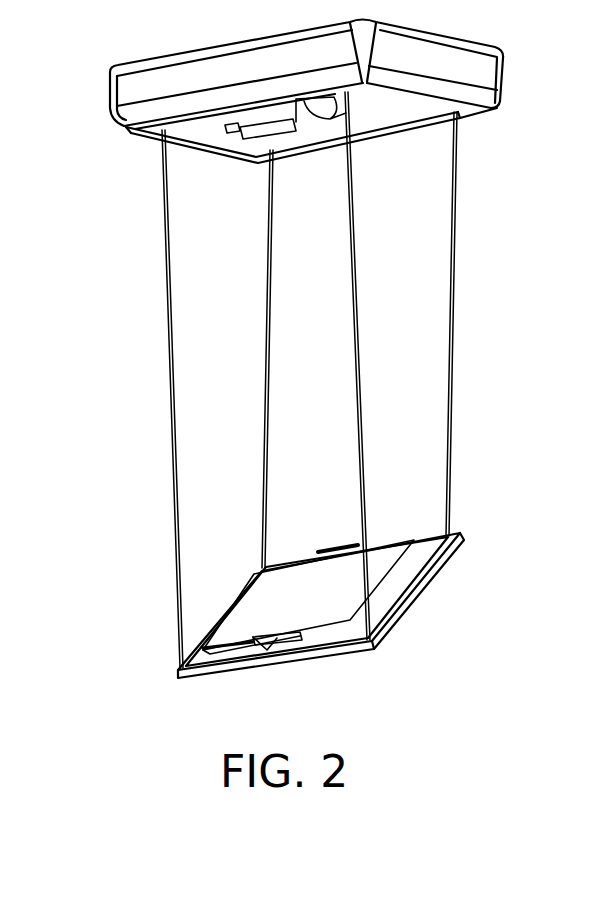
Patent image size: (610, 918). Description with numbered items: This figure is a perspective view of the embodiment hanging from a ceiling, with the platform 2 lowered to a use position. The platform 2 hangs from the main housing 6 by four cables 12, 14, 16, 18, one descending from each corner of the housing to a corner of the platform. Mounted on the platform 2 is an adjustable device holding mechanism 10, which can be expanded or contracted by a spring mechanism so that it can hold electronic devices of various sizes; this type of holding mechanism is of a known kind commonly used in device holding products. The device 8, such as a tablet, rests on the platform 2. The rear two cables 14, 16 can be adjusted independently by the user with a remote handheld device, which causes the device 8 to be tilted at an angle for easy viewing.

The main housing 6 is at (487, 78).
The cable 12 is at (167, 390).
The rear cable 14 is at (267, 295).
The rear cable 16 is at (453, 297).
The cable 18 is at (368, 420).
The platform 2 is at (287, 652).
The device 8 is at (247, 619).
The adjustable device holding mechanism 10 is at (250, 660).